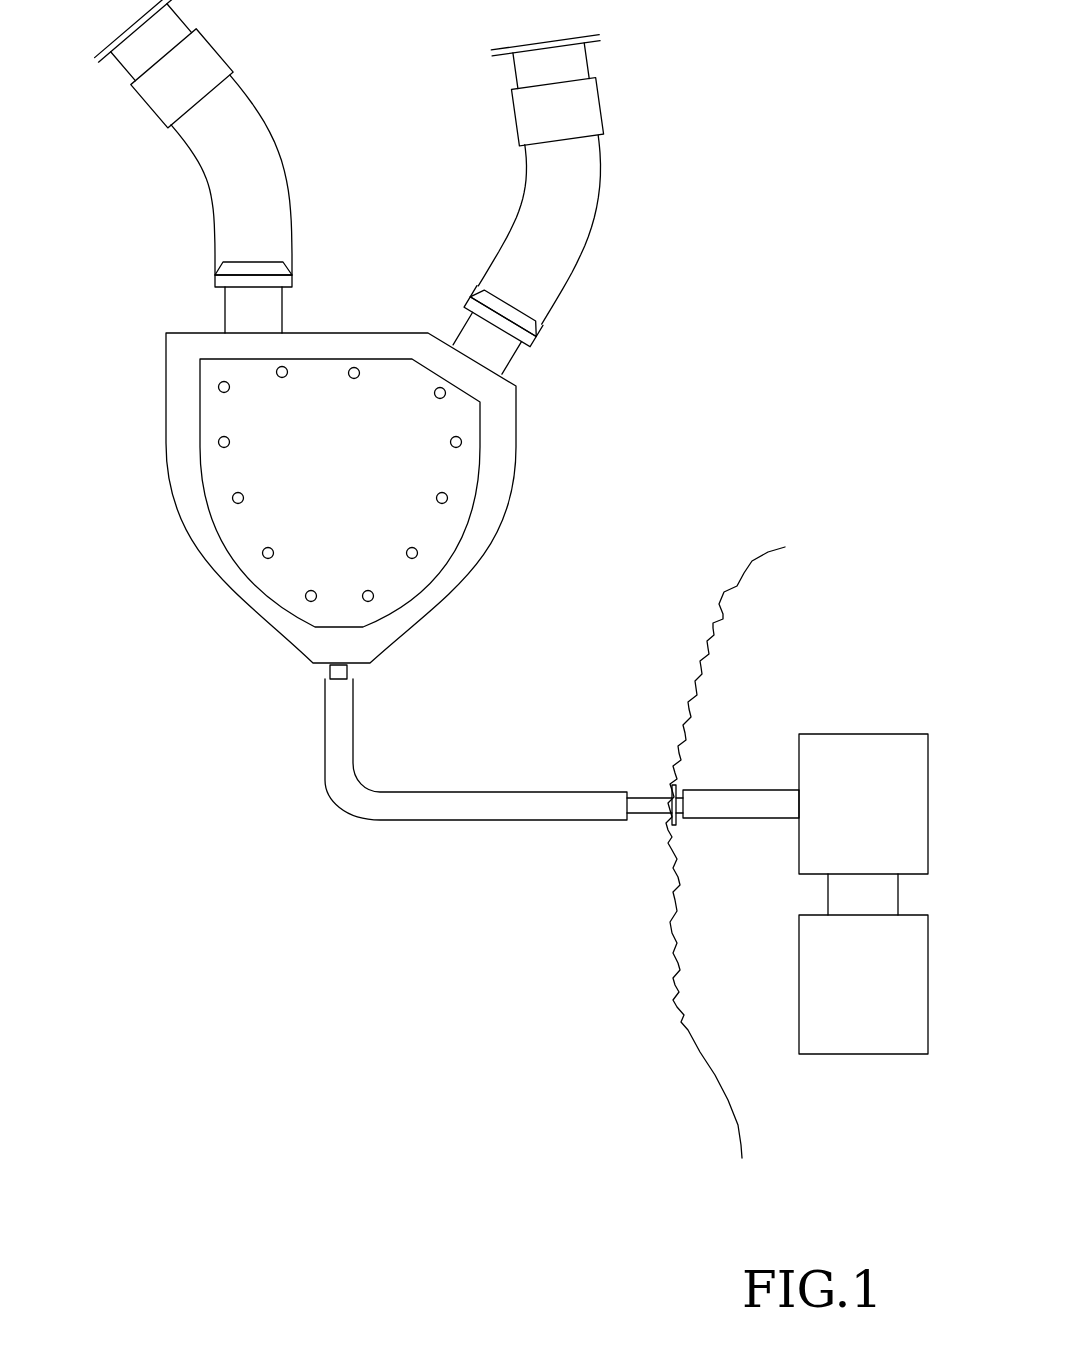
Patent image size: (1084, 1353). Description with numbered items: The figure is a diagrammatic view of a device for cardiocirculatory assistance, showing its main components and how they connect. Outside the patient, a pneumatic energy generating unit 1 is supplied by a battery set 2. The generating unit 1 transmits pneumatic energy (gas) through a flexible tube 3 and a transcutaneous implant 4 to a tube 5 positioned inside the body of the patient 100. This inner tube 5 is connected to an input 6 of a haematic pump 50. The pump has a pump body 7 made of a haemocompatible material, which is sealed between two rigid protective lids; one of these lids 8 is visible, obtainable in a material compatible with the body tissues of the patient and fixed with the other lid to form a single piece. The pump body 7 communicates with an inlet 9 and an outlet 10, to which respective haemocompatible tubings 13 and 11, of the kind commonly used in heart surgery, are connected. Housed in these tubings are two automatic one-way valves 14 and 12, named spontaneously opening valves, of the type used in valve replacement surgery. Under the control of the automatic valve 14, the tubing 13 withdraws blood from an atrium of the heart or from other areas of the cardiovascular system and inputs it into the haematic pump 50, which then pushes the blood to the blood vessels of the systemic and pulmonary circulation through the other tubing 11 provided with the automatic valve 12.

The pneumatic energy generating unit 1 is at (853, 763).
The battery set 2 is at (860, 1025).
The flexible tube 3 is at (747, 807).
The transcutaneous implant 4 is at (667, 808).
The tube 5 is at (373, 810).
The input 6 is at (337, 672).
The pump body 7 is at (302, 637).
The rigid protective lid 8 is at (310, 472).
The inlet 9 is at (240, 312).
The outlet 10 is at (492, 347).
The haemocompatible tubing 11 is at (568, 242).
The automatic one-way valve 12 is at (550, 117).
The haemocompatible tubing 13 is at (260, 173).
The automatic one-way valve 14 is at (193, 63).
The haematic pump 50 is at (355, 469).
The body of the patient 100 is at (722, 618).